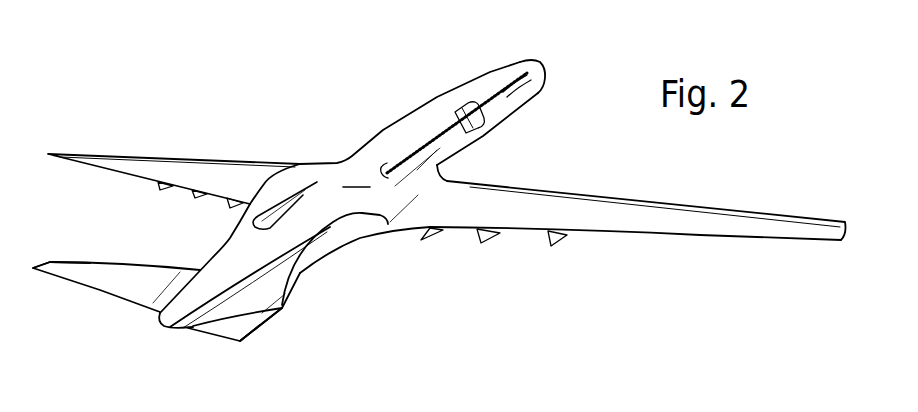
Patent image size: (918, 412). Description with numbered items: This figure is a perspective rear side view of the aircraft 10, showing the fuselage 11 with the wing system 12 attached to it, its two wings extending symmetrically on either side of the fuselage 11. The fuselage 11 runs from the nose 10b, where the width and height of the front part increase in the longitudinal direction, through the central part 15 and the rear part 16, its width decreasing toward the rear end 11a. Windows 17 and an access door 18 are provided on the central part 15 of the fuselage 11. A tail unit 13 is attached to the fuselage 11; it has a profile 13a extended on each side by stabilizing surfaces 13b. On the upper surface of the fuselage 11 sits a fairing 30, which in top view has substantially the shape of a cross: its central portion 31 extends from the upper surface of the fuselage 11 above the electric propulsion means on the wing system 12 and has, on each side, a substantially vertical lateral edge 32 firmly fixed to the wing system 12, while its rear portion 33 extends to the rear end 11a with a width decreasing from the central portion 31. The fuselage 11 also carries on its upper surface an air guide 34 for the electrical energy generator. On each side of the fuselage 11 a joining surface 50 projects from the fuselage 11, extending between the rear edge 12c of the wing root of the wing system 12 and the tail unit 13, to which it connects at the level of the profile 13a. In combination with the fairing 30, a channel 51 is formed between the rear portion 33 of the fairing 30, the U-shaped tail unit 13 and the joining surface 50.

The aircraft 10 is at (327, 133).
The nose 10b is at (548, 49).
The fuselage 11 is at (437, 102).
The rear end 11a is at (173, 328).
The wing system 12 is at (188, 172).
The rear edge of the wing root 12c is at (397, 228).
The tail unit 13 is at (149, 310).
The profile 13a is at (157, 267).
The stabilizing surfaces 13b is at (65, 265).
The central part 15 is at (477, 156).
The rear part 16 is at (338, 253).
The windows 17 is at (517, 92).
The access door 18 is at (473, 110).
The fairing 30 is at (356, 175).
The central portion 31 is at (270, 190).
The lateral edge 32 is at (405, 203).
The rear portion 33 is at (215, 263).
The air guide 34 is at (250, 227).
The joining surface 50 is at (320, 246).
The channel 51 is at (290, 253).